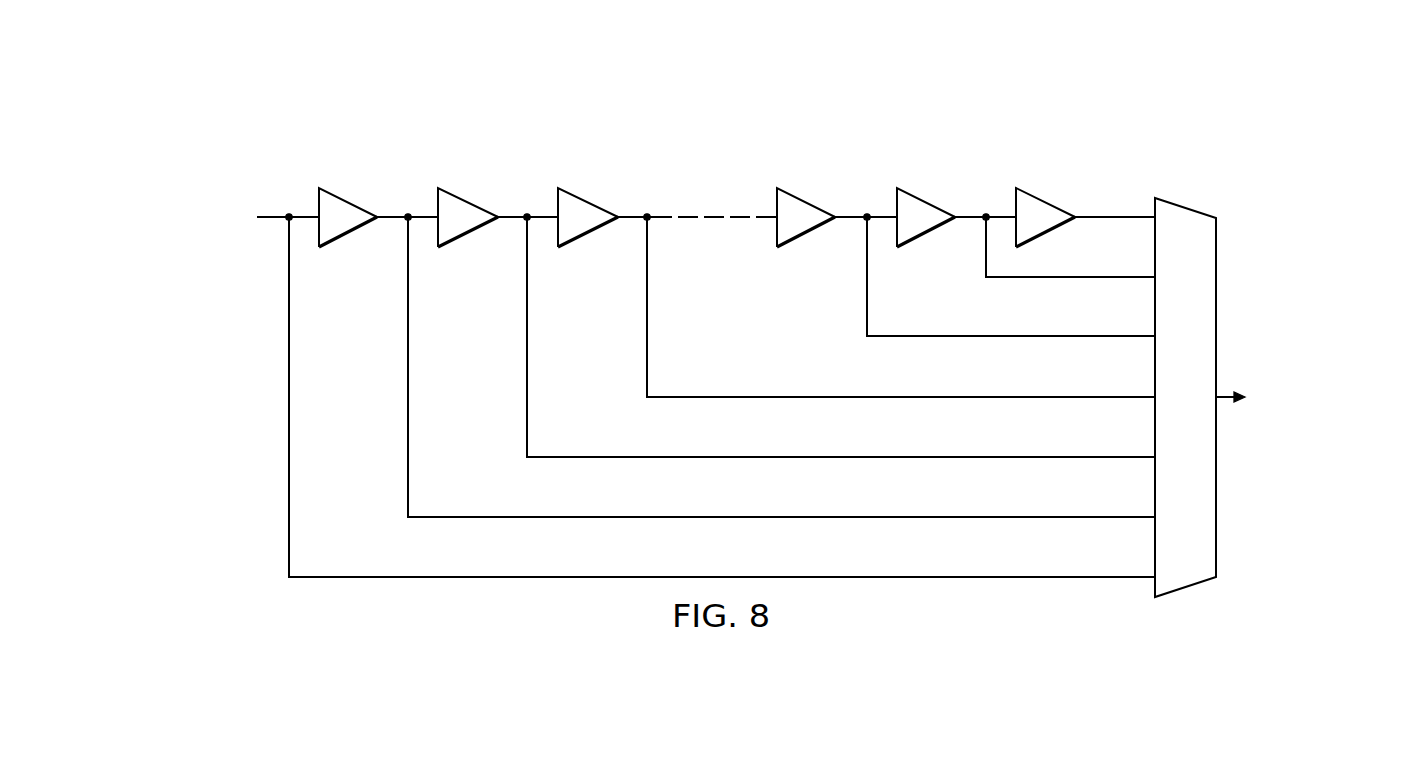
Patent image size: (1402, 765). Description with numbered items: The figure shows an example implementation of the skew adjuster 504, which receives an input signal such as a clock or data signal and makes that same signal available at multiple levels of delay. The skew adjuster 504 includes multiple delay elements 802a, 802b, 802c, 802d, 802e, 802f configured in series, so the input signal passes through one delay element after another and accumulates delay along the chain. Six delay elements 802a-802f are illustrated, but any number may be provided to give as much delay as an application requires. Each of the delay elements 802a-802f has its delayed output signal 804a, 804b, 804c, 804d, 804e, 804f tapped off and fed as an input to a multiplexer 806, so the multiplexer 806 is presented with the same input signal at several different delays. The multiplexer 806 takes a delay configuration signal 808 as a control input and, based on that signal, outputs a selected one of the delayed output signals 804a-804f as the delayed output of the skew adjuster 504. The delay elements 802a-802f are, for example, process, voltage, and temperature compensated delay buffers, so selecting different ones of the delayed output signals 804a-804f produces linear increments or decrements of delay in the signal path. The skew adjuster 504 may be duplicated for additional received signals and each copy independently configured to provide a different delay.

The skew adjuster 504 is at (284, 65).
The multiplexer 806 is at (173, 207).
The delay element 802a is at (348, 200).
The delay element 802b is at (466, 200).
The delay element 802c is at (586, 200).
The delay element 802d is at (805, 200).
The delay element 802e is at (925, 200).
The delay element 802f is at (1045, 200).
The delayed output signal 804a is at (780, 517).
The delayed output signal 804b is at (840, 457).
The delayed output signal 804c is at (902, 397).
The delayed output signal 804d is at (1010, 336).
The delayed output signal 804e is at (1104, 277).
The delayed output signal 804f is at (1115, 217).
The delay configuration signal 808 is at (1166, 410).